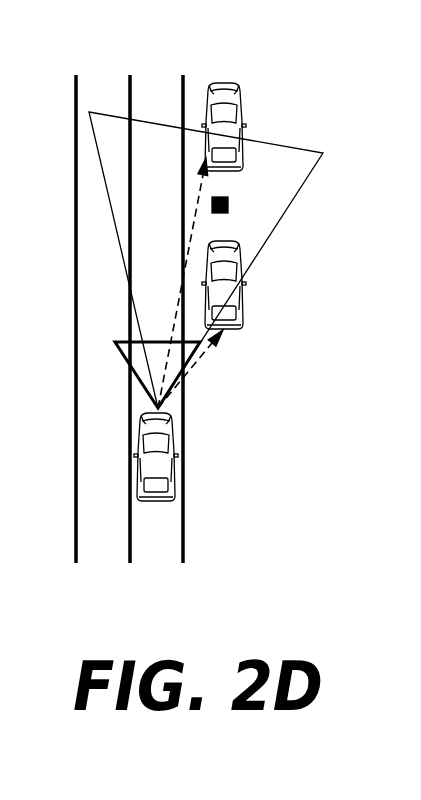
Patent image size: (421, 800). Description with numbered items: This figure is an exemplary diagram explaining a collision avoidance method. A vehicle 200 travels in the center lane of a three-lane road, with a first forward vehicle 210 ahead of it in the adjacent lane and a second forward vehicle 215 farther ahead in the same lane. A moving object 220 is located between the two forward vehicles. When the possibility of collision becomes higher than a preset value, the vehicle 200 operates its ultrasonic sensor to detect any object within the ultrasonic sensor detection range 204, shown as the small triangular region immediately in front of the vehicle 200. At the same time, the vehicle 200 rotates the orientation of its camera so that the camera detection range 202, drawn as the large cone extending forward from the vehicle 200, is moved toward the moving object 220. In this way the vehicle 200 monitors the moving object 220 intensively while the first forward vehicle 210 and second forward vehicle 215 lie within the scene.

The vehicle 200 is at (178, 478).
The camera detection range 202 is at (290, 147).
The ultrasonic sensor detection range 204 is at (120, 356).
The first forward vehicle 210 is at (243, 318).
The second forward vehicle 215 is at (223, 82).
The moving object 220 is at (228, 204).